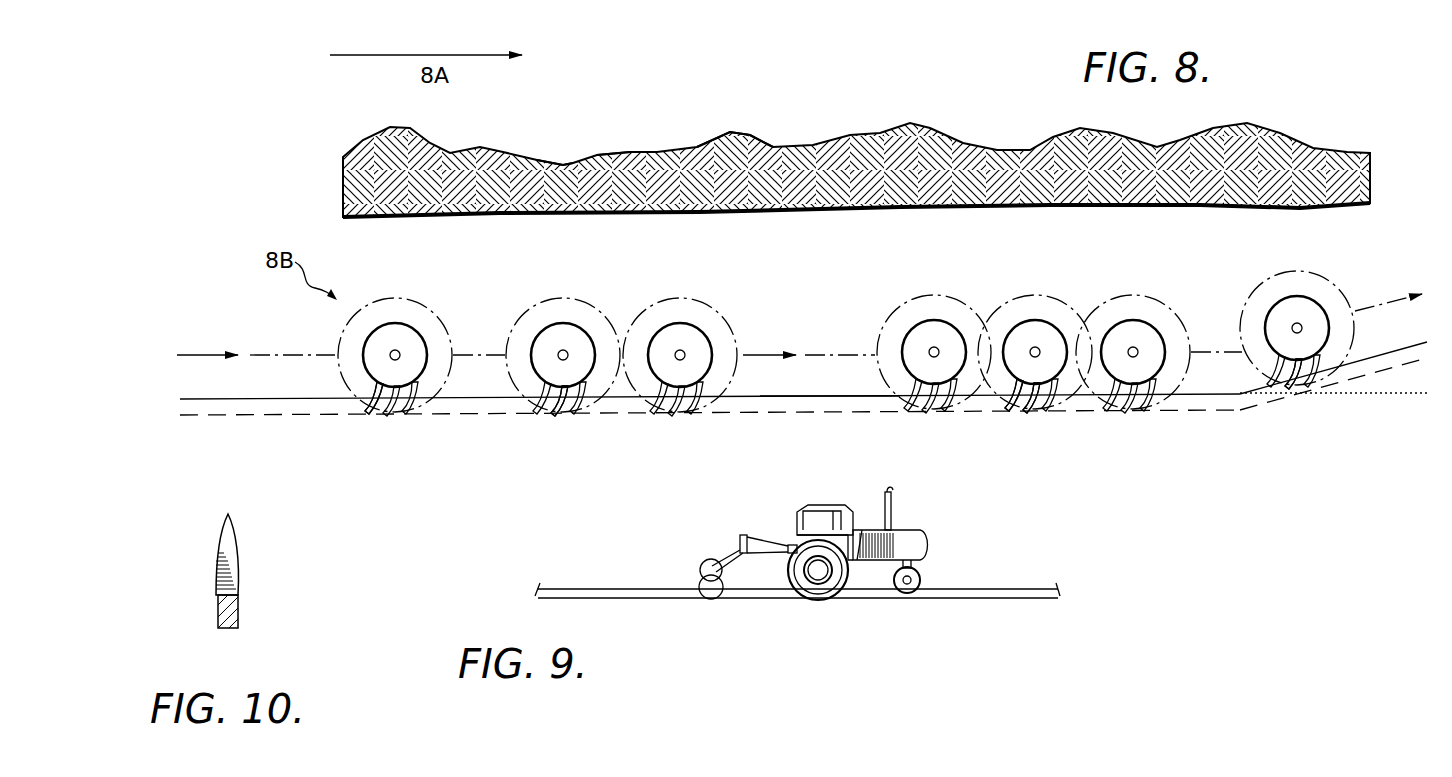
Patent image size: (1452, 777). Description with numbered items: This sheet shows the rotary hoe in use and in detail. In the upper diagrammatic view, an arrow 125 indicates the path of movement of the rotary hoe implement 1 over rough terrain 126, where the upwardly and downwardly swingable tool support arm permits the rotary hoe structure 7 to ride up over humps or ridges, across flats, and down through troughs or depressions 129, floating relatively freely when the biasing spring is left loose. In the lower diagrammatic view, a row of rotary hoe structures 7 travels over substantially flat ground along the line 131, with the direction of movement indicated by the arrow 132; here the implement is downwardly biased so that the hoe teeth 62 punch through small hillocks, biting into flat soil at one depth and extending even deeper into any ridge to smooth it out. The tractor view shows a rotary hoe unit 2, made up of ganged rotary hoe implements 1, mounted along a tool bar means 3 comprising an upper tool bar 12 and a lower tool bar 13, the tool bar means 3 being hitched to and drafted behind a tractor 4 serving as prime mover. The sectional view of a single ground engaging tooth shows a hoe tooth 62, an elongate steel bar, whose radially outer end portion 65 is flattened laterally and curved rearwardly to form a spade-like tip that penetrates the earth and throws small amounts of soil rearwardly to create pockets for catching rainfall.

In FIG. 8, the arrow 125 is at (389, 55).
In FIG. 8, the rough terrain 126 is at (428, 142).
In FIG. 8, the troughs or depressions 129 is at (568, 162).
In FIG. 8, the rotary hoe structure 7 is at (612, 296).
In FIG. 9, the rotary hoe structure 7 is at (698, 574).
In FIG. 8, the arrow 132 is at (203, 355).
In FIG. 8, the line 131 is at (226, 398).
In FIG. 10, the radially outer end portions 65 is at (240, 540).
In FIG. 10, the hoe teeth 62 is at (240, 596).
In FIG. 9, the rotary hoe implement 1 is at (710, 548).
In FIG. 9, the rotary hoe unit 2 is at (718, 536).
In FIG. 9, the upper tool bar 12 is at (740, 537).
In FIG. 9, the tool bar means 3 is at (752, 538).
In FIG. 9, the lower tool bar 13 is at (746, 553).
In FIG. 9, the tractor 4 is at (926, 538).